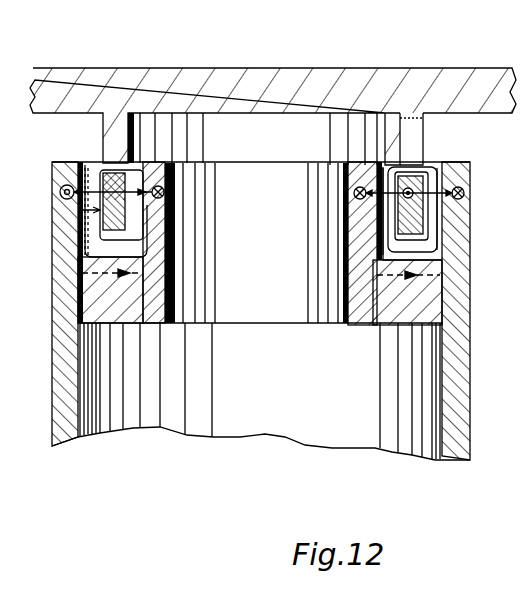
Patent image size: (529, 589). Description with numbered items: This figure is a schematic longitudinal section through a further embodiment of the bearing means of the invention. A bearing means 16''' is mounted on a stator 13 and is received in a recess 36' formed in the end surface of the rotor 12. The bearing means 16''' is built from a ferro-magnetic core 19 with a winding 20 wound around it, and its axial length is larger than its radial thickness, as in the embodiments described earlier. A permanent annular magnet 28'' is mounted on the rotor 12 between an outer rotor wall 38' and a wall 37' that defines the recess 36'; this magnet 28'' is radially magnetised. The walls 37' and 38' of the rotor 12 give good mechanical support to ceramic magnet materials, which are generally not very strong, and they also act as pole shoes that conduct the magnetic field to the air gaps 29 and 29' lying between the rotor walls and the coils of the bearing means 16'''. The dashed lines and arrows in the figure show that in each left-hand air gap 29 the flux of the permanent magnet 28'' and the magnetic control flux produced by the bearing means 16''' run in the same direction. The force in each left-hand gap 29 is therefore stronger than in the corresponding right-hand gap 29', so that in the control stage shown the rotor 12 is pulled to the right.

The stator 13 is at (93, 88).
The rotor 12 is at (395, 428).
The ferro-magnetic core 19 is at (100, 172).
The winding 20 is at (100, 222).
The left-hand air gap 29 is at (395, 148).
The bearing means 16''' is at (452, 99).
The right-hand air gap 29' is at (469, 193).
The wall 37' is at (326, 243).
The recess 36' is at (437, 213).
The outer rotor wall 38' is at (285, 311).
The permanent annular magnet 28'' is at (260, 312).